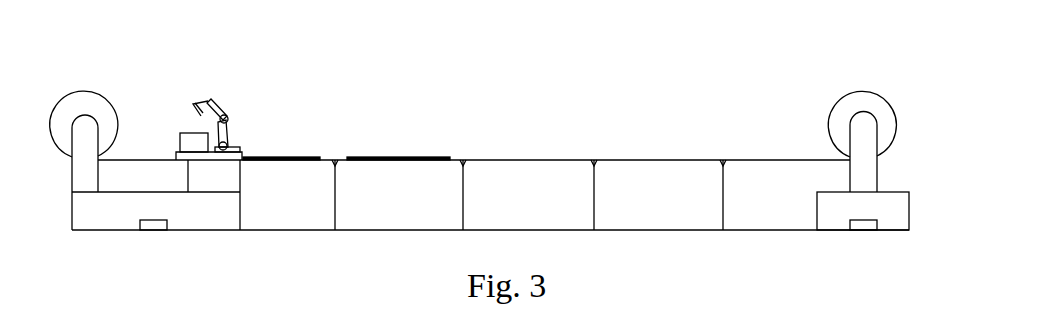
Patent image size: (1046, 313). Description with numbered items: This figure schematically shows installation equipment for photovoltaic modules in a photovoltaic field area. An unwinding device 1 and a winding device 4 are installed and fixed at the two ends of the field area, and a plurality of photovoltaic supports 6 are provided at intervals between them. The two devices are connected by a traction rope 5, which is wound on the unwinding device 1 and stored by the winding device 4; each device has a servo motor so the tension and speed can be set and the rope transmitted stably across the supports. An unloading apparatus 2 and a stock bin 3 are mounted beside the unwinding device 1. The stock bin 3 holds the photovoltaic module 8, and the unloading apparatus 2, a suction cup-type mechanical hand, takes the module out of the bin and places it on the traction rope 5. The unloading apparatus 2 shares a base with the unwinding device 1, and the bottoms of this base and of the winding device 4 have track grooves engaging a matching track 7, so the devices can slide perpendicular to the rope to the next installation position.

The unwinding device 1 is at (99, 110).
The unloading apparatus 2 is at (228, 120).
The stock bin 3 is at (188, 133).
The winding device 4 is at (840, 127).
The traction rope 5 is at (528, 158).
The photovoltaic support 6 is at (600, 160).
The track 7 is at (868, 222).
The photovoltaic module 8 is at (308, 157).